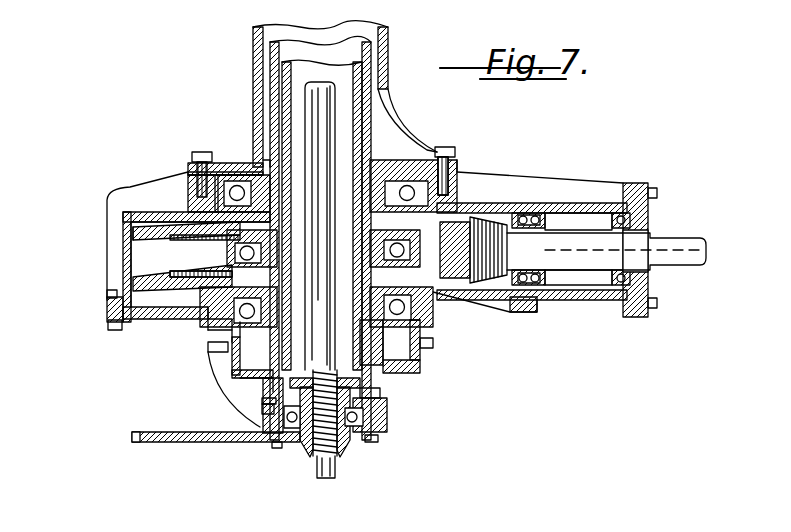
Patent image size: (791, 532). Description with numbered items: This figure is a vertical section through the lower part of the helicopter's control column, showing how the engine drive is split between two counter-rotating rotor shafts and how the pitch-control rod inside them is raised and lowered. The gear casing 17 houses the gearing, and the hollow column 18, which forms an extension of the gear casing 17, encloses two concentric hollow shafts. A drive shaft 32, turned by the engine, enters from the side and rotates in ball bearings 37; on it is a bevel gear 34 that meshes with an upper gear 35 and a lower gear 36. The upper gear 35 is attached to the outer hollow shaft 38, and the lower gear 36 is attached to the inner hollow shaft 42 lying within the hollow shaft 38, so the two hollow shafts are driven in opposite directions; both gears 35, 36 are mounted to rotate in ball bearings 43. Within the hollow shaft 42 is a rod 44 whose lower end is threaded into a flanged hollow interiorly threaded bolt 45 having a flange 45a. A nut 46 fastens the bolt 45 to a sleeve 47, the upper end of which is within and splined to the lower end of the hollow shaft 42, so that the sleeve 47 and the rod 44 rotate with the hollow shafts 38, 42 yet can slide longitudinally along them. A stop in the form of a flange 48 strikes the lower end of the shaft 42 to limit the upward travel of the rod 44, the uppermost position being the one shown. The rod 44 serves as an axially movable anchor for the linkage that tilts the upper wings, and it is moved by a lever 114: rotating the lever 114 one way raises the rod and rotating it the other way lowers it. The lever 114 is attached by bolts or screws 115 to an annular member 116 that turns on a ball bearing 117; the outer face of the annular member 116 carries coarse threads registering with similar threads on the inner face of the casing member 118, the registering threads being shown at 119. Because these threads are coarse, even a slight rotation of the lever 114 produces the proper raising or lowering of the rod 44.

The gear casing 17 is at (188, 202).
The hollow column 18 is at (253, 33).
The drive shaft 32 is at (678, 268).
The bevel gear 34 is at (492, 285).
The upper gear 35 is at (150, 237).
The lower gear 36 is at (155, 276).
The ball bearings 37 is at (577, 292).
The hollow shaft 38 is at (274, 56).
The hollow shaft 42 is at (286, 80).
The ball bearings 43 is at (224, 175).
The rod 44 is at (312, 102).
The flanged hollow interiorly threaded bolt 45 is at (340, 472).
The flange 45a is at (345, 386).
The nut 46 is at (340, 452).
The sleeve 47 is at (385, 430).
The flange 48 is at (382, 393).
The lever 114 is at (132, 437).
The bolts or screws 115 is at (277, 446).
The annular member 116 is at (265, 408).
The ball bearing 117 is at (292, 423).
The casing member 118 is at (262, 385).
The registering threads 119 is at (263, 403).